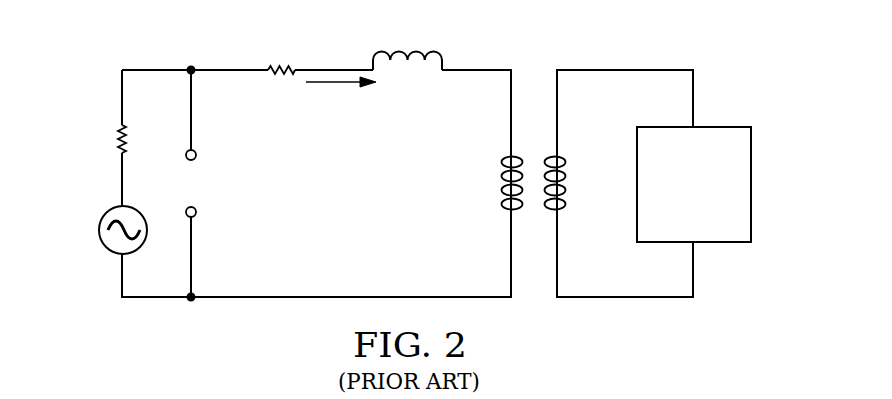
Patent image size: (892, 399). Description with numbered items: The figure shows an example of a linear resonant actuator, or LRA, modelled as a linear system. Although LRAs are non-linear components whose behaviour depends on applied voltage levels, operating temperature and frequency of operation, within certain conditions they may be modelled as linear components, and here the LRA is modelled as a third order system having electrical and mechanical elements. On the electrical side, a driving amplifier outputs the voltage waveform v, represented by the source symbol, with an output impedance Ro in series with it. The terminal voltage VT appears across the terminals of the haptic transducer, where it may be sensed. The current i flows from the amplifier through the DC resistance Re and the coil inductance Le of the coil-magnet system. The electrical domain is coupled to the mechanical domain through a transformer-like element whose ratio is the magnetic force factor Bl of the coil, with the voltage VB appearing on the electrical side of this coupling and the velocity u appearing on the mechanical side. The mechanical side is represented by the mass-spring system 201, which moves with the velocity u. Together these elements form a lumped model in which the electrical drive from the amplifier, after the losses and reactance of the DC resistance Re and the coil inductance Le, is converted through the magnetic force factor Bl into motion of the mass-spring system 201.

The mass-spring system 201 is at (752, 184).
The DC resistance Re is at (281, 55).
The coil inductance Le is at (407, 47).
The output impedance Ro is at (105, 139).
The voltage waveform v is at (106, 230).
The current i is at (341, 92).
The terminal voltage VT is at (190, 183).
The magnetic force factor Bl is at (534, 126).
The back-EMF voltage VB is at (472, 185).
The velocity u is at (586, 182).